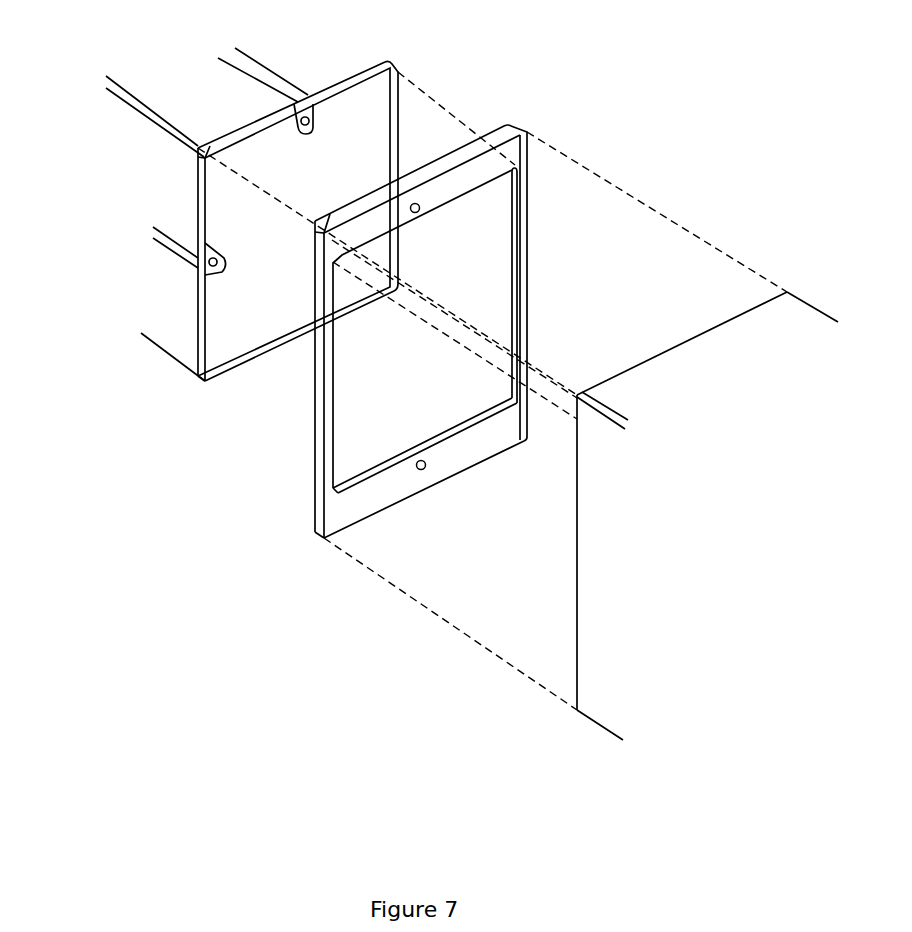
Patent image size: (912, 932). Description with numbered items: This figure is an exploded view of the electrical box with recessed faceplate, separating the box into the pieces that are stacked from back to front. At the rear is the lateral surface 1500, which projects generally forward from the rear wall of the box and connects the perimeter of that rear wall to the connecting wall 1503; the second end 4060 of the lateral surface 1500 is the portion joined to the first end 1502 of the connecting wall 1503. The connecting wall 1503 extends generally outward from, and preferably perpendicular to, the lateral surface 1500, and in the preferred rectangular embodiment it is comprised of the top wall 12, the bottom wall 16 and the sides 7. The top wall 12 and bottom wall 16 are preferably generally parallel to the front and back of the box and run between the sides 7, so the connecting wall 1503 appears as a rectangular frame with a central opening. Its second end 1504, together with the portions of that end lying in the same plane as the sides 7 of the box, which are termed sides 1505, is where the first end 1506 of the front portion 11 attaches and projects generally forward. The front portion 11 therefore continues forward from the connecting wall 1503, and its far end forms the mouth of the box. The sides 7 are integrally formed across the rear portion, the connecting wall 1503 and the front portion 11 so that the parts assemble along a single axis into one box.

The sides 7 is at (525, 233).
The front portion 11 is at (578, 762).
The top wall 12 is at (382, 212).
The bottom wall 16 is at (393, 485).
The lateral surface 1500 is at (74, 317).
The first end of the connecting wall 1502 is at (452, 200).
The connecting wall 1503 is at (276, 564).
The second end of the connecting wall 1504 is at (432, 165).
The sides of the connecting wall 1505 is at (528, 343).
The first end of the front portion 1506 is at (693, 342).
The second end of the lateral surface 4060 is at (372, 71).